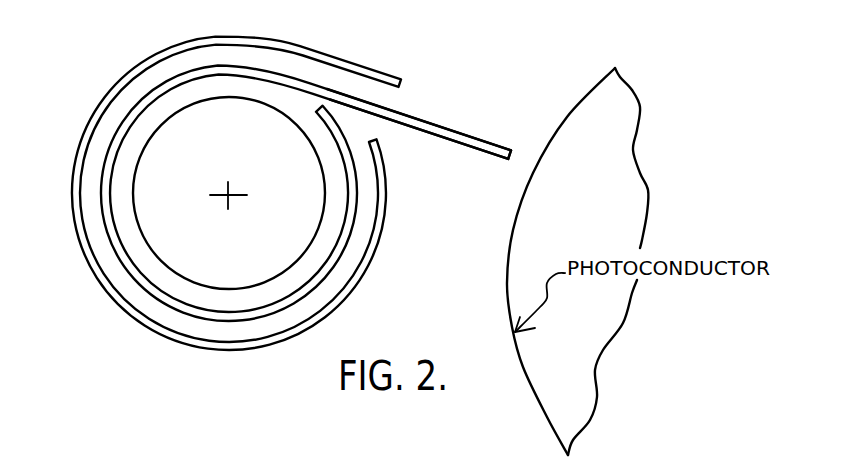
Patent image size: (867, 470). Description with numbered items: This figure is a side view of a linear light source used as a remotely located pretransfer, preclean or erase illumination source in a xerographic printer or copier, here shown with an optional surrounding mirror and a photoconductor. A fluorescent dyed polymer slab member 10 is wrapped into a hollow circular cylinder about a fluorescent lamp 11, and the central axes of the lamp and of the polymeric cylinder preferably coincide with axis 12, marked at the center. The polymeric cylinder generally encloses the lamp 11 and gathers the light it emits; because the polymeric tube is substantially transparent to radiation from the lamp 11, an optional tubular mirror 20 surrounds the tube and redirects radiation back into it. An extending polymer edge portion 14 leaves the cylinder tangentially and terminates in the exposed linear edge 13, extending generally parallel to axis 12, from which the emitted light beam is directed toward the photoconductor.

The fluorescent dyed polymer slab member 10 is at (140, 103).
The fluorescent lamp 11 is at (148, 241).
The axis 12 is at (231, 193).
The exposed linear edge 13 is at (520, 162).
The extending polymer edge portion 14 is at (465, 134).
The tubular mirror 20 is at (342, 47).